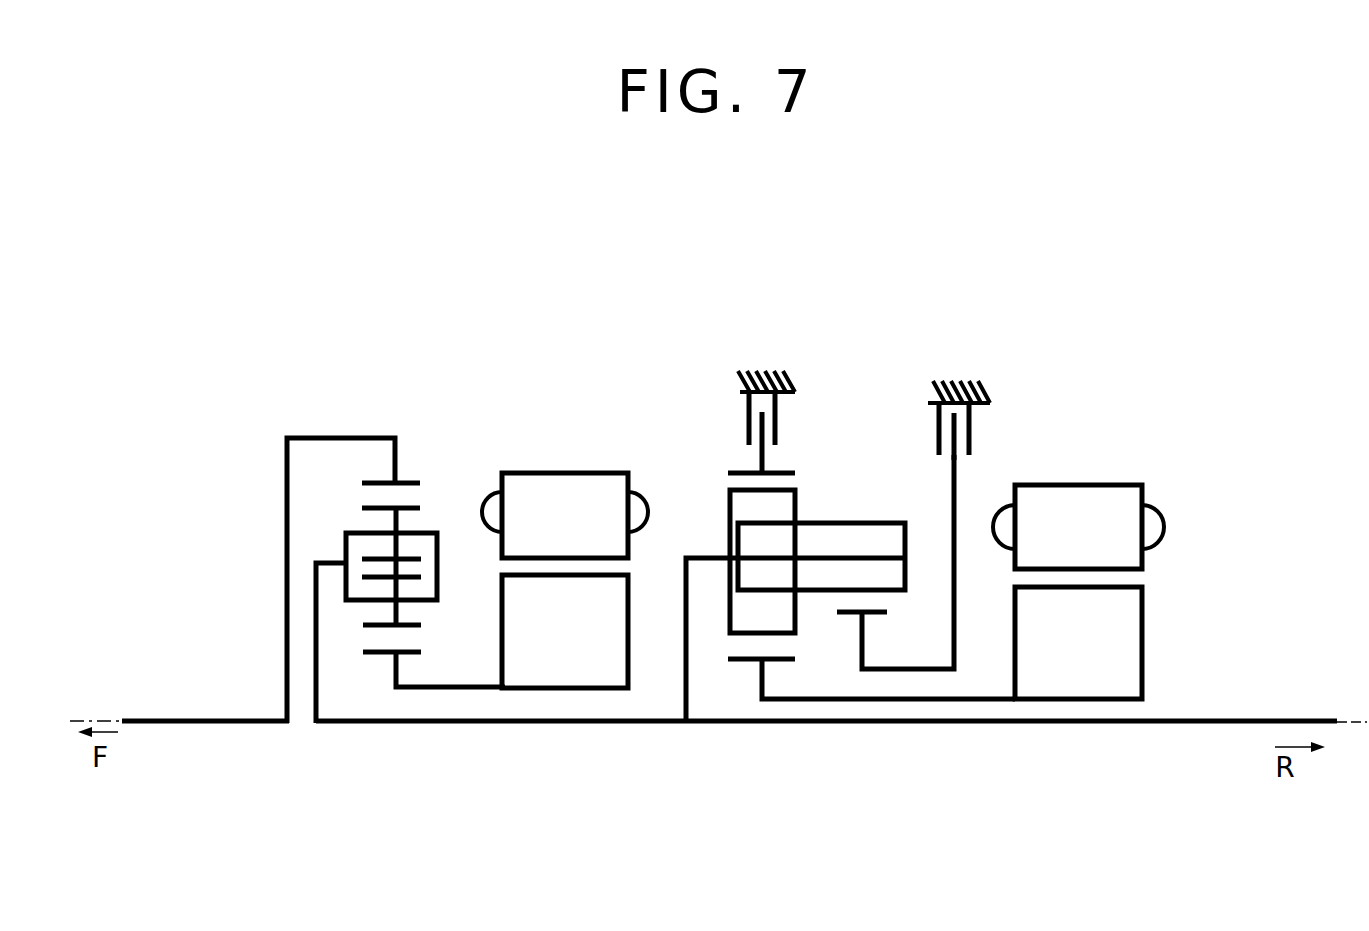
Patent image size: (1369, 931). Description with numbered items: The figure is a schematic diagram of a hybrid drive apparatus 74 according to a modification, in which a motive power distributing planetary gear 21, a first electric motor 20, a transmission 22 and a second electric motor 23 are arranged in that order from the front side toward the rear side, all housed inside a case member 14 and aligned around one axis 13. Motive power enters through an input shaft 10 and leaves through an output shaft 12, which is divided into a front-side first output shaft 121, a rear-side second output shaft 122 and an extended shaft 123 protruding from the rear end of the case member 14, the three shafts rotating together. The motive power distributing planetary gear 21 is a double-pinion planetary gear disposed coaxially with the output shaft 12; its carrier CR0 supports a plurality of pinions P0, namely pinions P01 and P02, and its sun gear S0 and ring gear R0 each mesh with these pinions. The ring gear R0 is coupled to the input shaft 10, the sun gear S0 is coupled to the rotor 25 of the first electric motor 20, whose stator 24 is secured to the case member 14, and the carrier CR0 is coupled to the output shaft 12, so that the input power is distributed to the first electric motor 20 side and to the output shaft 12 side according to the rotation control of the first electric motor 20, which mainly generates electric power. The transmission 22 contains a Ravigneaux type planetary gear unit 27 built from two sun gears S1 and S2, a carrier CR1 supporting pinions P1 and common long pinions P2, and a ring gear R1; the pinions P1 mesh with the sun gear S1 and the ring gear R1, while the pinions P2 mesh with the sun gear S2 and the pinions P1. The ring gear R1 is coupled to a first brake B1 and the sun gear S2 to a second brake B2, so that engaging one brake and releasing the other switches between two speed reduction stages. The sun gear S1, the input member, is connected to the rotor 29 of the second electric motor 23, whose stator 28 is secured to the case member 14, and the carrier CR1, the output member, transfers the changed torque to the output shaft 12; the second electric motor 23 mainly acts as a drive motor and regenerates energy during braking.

The hybrid drive apparatus 74 is at (630, 262).
The input shaft 10 is at (222, 723).
The output shaft 12 is at (766, 724).
The first output shaft 121 is at (395, 723).
The second output shaft 122 is at (870, 724).
The extended shaft 123 is at (1150, 724).
The one axis 13 is at (1359, 726).
The case member 14 is at (737, 381).
The first electric motor 20 is at (573, 505).
The motive power distributing planetary gear 21 is at (336, 440).
The transmission 22 is at (810, 535).
The second electric motor 23 is at (1112, 519).
The stator 24 is at (588, 478).
The rotor 25 is at (618, 637).
The planetary gear unit 27 is at (810, 560).
The stator 28 is at (1133, 495).
The rotor 29 is at (1130, 620).
The ring gear R0 is at (408, 482).
The carrier CR0 is at (346, 548).
The sun gear S0 is at (389, 654).
The pinions P0 is at (472, 659).
The pinion P01 is at (403, 606).
The pinion P02 is at (402, 519).
The ring gear R1 is at (745, 472).
The pinions P1 is at (730, 502).
The common long pinions P2 is at (880, 523).
The carrier CR1 is at (684, 672).
The sun gear S1 is at (744, 660).
The sun gear S2 is at (819, 521).
The first brake B1 is at (777, 408).
The second brake B2 is at (931, 395).